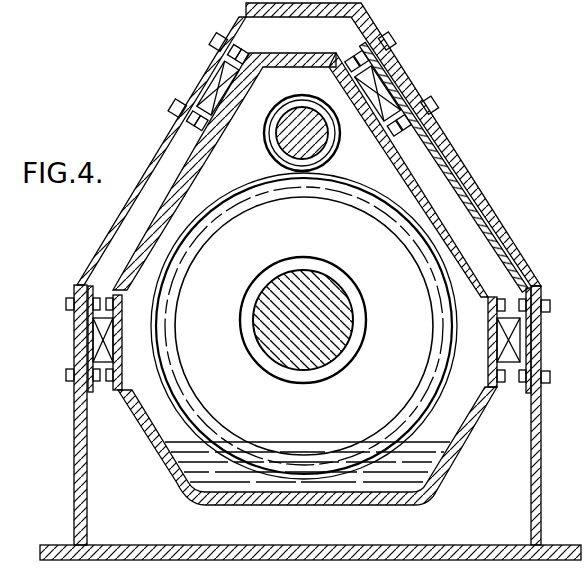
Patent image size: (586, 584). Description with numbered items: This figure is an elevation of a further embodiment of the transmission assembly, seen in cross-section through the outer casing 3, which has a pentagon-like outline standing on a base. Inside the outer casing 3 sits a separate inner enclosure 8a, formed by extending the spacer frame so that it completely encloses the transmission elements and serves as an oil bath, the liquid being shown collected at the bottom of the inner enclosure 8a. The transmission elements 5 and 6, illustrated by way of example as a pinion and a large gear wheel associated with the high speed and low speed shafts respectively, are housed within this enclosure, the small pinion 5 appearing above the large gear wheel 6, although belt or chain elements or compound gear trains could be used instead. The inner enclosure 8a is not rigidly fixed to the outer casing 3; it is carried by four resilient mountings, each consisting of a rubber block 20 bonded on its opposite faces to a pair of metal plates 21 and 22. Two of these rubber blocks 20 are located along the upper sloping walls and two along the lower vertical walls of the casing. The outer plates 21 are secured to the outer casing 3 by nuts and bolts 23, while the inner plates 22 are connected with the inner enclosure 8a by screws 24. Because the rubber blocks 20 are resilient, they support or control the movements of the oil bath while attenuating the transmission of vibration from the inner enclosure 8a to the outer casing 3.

The casing 3 is at (457, 160).
The transmission element 5 is at (290, 128).
The transmission element 6 is at (247, 210).
The inner enclosure 8a is at (453, 423).
The rubber block 20 is at (220, 92).
The metal plate 21 is at (243, 30).
The metal plate 22 is at (493, 296).
The nuts and bolts 23 is at (212, 42).
The screws 24 is at (243, 62).